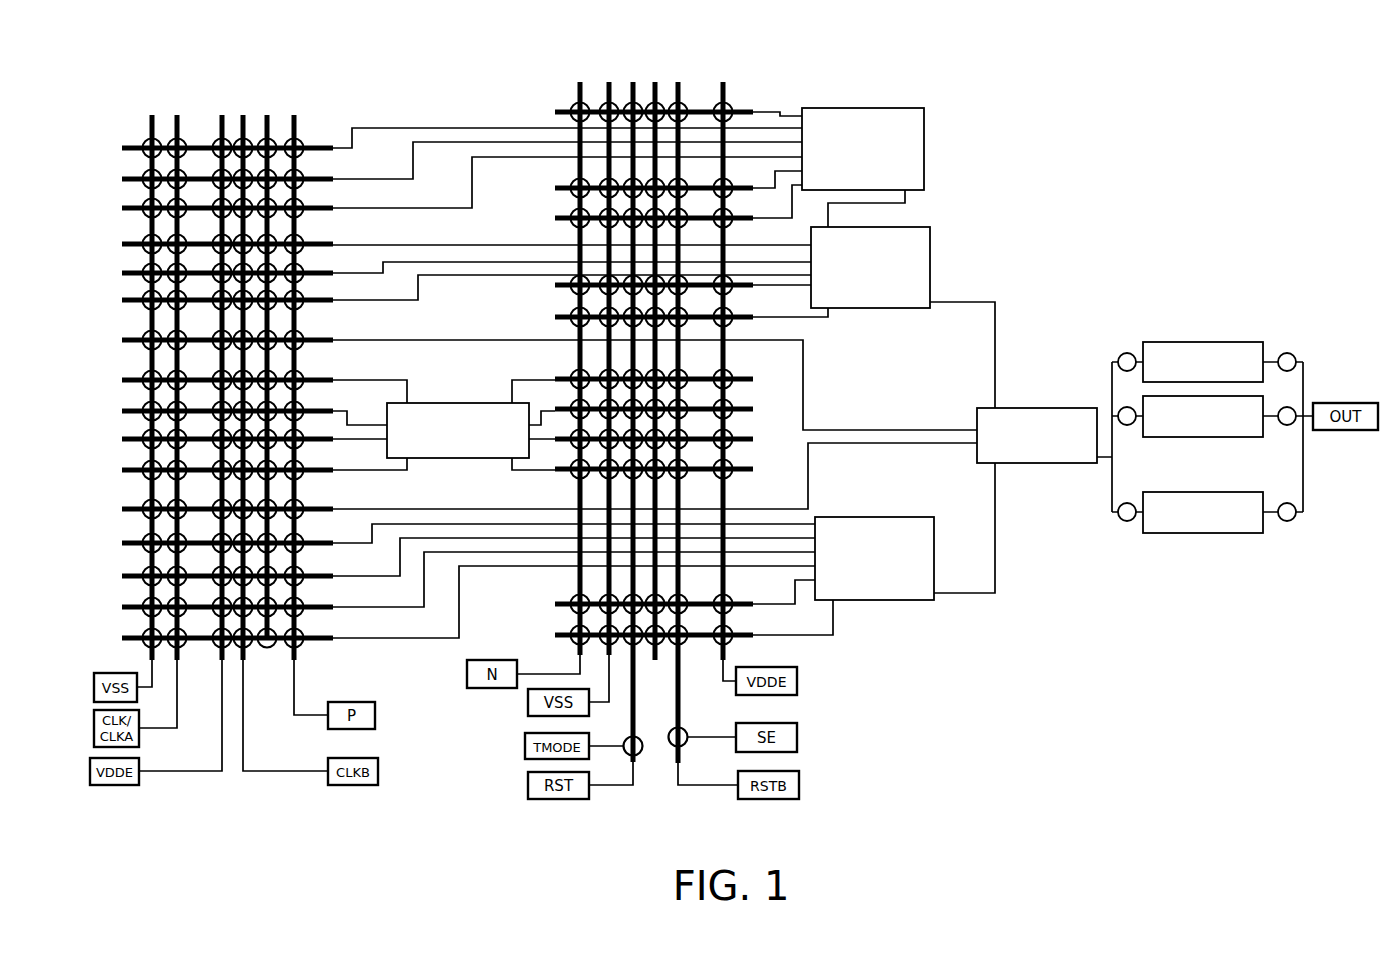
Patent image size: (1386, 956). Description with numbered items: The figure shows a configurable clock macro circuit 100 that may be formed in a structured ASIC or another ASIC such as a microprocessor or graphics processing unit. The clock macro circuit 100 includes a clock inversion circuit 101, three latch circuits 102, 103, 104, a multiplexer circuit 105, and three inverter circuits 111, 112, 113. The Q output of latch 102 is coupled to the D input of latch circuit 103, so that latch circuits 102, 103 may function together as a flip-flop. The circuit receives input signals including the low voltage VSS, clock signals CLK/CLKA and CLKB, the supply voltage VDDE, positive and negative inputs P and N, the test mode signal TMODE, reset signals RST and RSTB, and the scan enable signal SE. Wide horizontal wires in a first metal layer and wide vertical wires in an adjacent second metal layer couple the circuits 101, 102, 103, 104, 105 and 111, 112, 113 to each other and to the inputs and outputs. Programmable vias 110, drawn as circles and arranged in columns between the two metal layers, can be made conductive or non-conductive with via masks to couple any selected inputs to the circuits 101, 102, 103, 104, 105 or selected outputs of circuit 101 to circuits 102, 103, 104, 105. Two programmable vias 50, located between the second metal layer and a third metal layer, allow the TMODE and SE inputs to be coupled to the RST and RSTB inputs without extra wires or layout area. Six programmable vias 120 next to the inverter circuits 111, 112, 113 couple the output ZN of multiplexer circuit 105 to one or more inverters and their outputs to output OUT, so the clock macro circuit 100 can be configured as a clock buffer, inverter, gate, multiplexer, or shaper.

The configurable clock macro circuit 100 is at (237, 80).
The clock inversion circuit 101 is at (436, 403).
The latch circuit 102 is at (872, 108).
The latch circuit 103 is at (867, 308).
The latch circuit 104 is at (868, 517).
The multiplexer circuit 105 is at (1028, 408).
The programmable vias 110 is at (150, 140).
The inverter circuit 111 is at (1183, 342).
The inverter circuit 112 is at (1190, 437).
The inverter circuit 113 is at (1195, 533).
The programmable vias 120 is at (1121, 353).
The programmable vias 50 is at (670, 746).